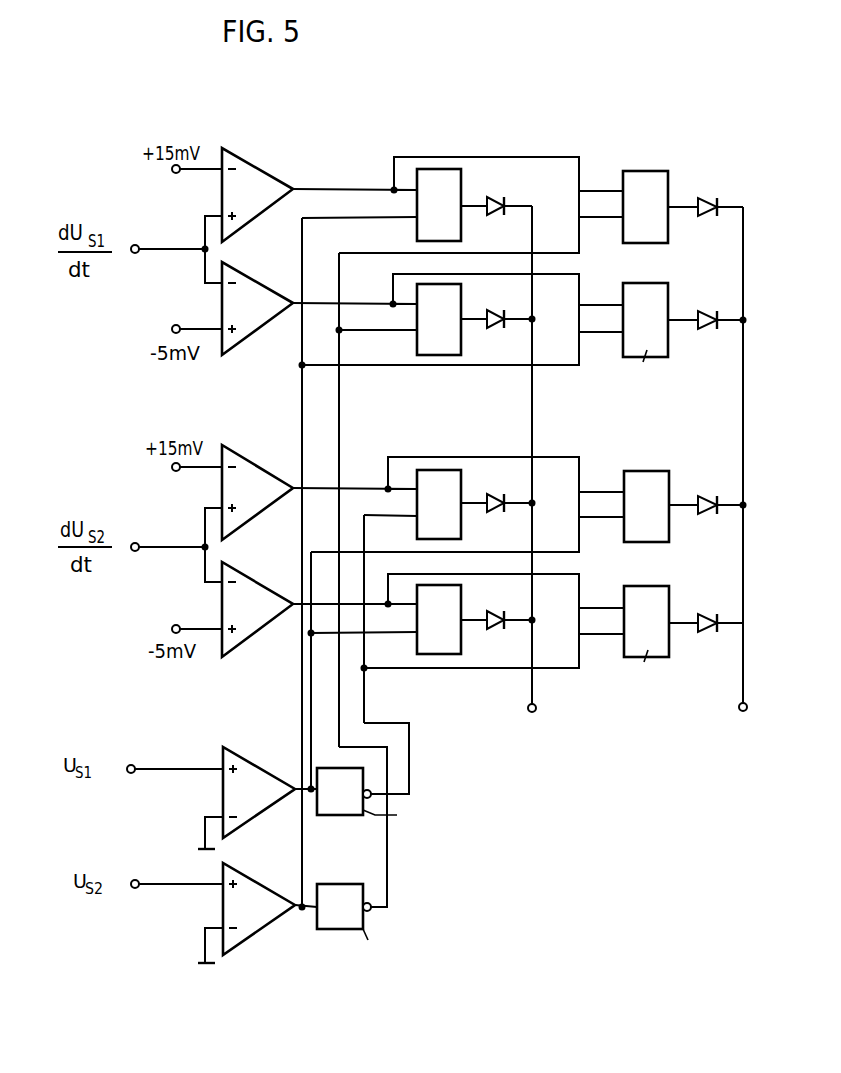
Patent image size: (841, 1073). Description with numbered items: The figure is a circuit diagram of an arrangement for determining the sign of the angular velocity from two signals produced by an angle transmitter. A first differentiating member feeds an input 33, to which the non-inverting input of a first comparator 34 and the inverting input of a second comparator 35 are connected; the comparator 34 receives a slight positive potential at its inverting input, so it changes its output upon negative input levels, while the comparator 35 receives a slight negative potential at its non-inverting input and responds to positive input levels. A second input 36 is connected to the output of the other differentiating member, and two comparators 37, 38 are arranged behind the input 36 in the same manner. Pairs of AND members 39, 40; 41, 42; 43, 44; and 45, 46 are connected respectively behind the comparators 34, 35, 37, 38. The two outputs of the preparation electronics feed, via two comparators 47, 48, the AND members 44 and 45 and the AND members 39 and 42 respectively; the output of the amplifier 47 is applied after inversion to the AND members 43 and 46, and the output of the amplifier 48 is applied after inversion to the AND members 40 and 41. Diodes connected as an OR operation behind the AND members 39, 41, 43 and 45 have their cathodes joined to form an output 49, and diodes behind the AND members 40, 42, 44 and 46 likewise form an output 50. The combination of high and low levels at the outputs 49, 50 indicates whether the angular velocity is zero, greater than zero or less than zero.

The input 33 is at (136, 245).
The first comparator 34 is at (255, 174).
The second comparator 35 is at (258, 318).
The second input 36 is at (136, 551).
The comparator 37 is at (250, 470).
The comparator 38 is at (258, 613).
The AND member 39 is at (453, 187).
The AND member 40 is at (663, 183).
The AND member 41 is at (453, 300).
The AND member 42 is at (663, 297).
The AND member 43 is at (453, 485).
The AND member 44 is at (664, 482).
The AND member 45 is at (453, 601).
The AND member 46 is at (664, 596).
The comparator 47 is at (255, 772).
The comparator 48 is at (258, 890).
The output 49 is at (536, 711).
The output 50 is at (747, 710).